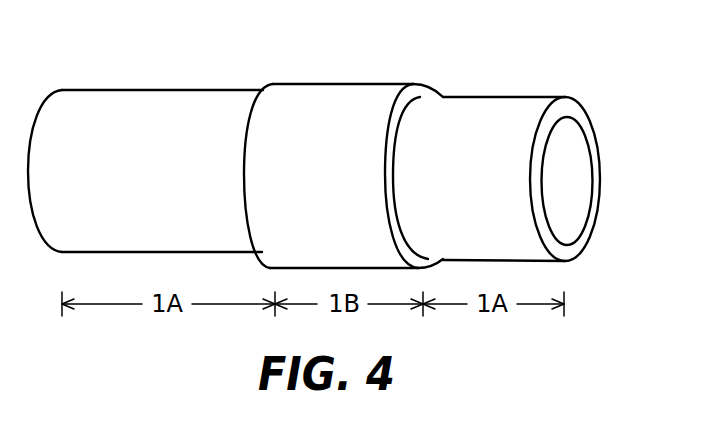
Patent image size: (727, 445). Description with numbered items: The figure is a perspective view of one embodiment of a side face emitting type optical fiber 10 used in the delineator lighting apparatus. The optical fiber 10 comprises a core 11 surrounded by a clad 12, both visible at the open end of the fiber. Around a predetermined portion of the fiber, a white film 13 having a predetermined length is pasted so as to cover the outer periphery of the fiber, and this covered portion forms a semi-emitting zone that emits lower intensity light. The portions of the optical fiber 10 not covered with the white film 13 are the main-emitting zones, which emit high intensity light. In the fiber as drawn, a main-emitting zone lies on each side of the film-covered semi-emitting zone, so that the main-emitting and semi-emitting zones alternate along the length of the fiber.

The side face emitting type optical fiber 10 is at (334, 138).
The core 11 is at (583, 163).
The clad 12 is at (542, 162).
The white film 13 is at (362, 102).